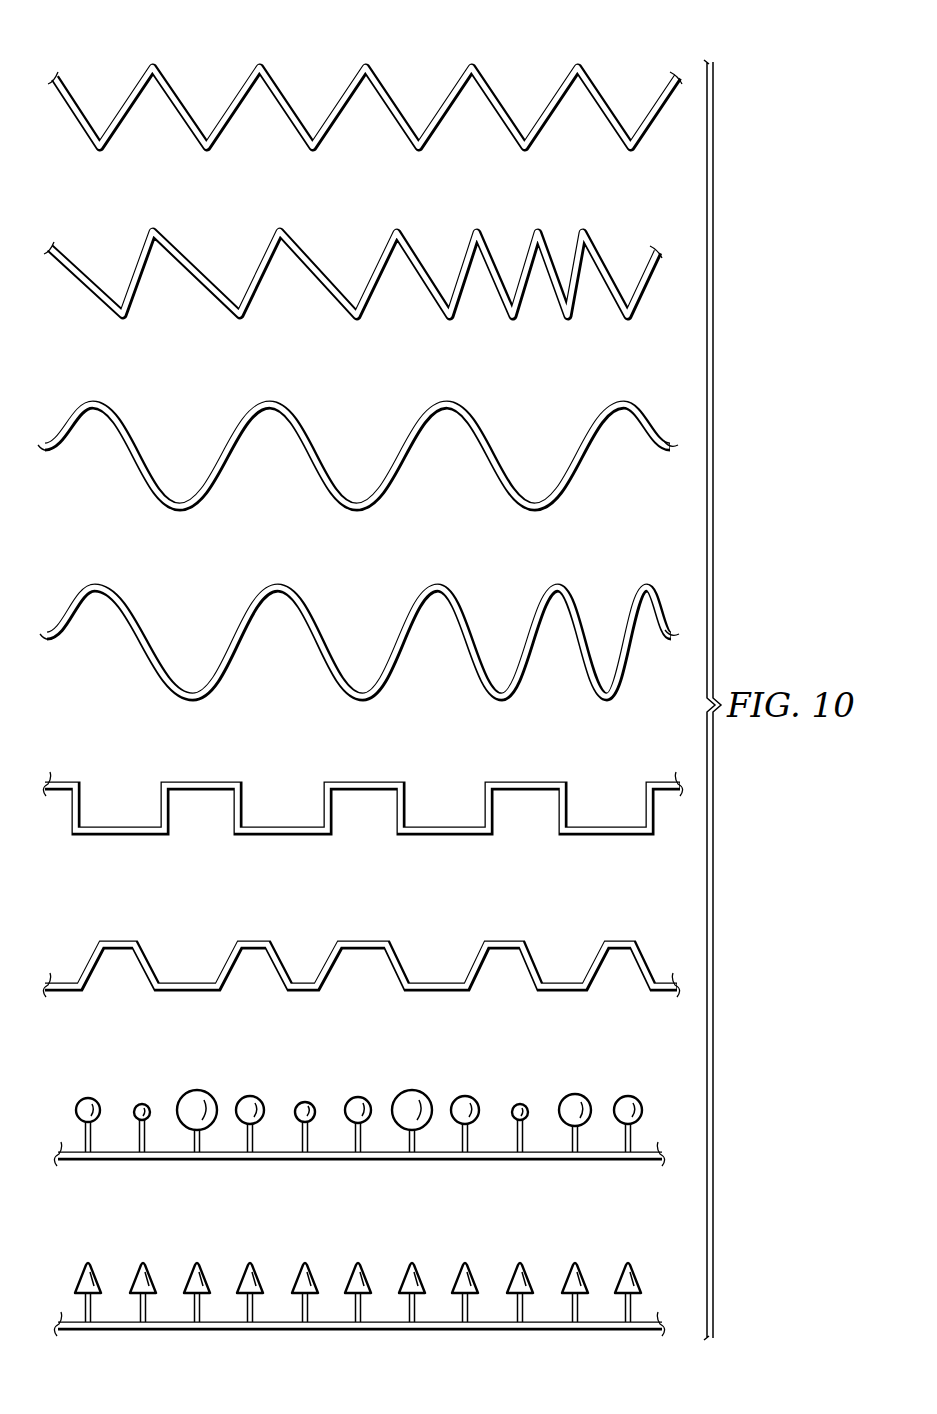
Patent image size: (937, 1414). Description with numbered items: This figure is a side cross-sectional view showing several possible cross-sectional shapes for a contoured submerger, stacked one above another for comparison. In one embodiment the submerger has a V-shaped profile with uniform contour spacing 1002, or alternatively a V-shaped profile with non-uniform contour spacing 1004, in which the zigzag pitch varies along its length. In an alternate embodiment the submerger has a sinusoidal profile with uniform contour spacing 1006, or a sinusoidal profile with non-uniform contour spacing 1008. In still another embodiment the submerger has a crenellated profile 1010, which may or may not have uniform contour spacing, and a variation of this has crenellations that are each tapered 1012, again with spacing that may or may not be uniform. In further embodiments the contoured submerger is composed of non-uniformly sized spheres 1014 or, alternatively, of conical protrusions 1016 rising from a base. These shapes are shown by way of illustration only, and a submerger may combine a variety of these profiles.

The V-shaped profile with uniform contour spacing 1002 is at (86, 57).
The V-shaped profile with non-uniform contour spacing 1004 is at (86, 232).
The sinusoidal profile with uniform contour spacing 1006 is at (86, 377).
The sinusoidal profile with non-uniform contour spacing 1008 is at (86, 569).
The crenellated profile 1010 is at (86, 755).
The tapered crenellations 1012 is at (86, 922).
The non-uniformly sized spheres 1014 is at (91, 1078).
The conical protrusions 1016 is at (96, 1245).